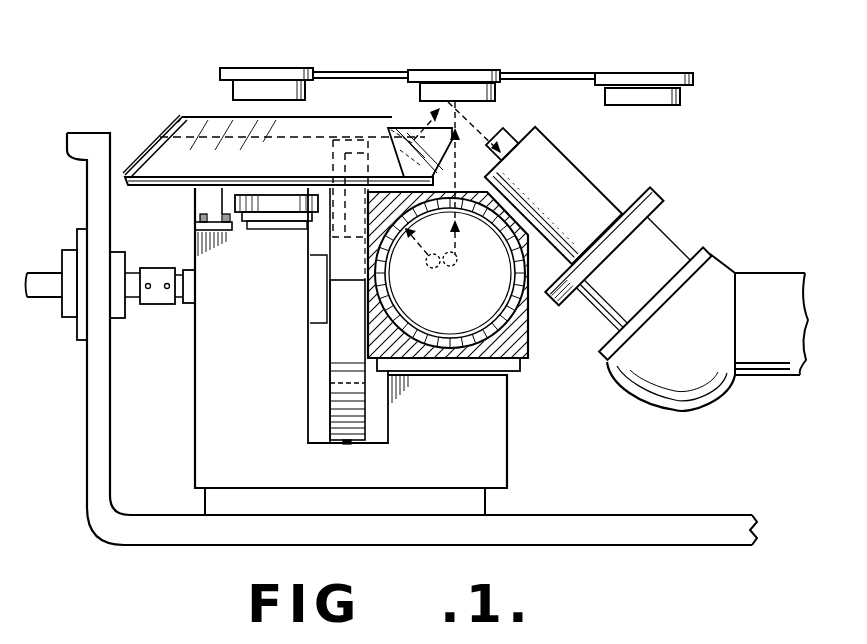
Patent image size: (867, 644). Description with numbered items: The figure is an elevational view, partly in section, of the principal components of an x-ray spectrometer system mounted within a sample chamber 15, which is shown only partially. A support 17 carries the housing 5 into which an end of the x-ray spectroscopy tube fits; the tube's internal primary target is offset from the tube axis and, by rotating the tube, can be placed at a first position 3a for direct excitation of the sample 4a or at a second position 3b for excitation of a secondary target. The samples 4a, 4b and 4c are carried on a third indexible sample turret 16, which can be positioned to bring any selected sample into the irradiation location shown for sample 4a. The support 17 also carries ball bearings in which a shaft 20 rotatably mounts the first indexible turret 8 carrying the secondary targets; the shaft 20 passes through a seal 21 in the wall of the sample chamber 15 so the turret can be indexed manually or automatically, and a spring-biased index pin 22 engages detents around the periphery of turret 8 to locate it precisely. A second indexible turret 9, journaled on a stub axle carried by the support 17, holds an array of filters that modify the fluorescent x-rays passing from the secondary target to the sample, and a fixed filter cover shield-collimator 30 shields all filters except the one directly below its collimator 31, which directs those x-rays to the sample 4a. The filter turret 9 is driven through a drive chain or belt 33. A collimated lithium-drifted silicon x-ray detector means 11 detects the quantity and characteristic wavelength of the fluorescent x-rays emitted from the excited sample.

The primary target position for direct excitation 3a is at (458, 262).
The primary target position for secondary target excitation 3b is at (432, 270).
The sample 4a is at (443, 90).
The sample 4b is at (630, 92).
The sample 4c is at (245, 90).
The housing 5 is at (538, 354).
The first indexible turret 8 is at (366, 418).
The second indexible turret 9 is at (152, 151).
The x-ray detector means 11 is at (623, 196).
The sample chamber 15 is at (88, 454).
The third indexible sample turret 16 is at (352, 72).
The support 17 is at (502, 455).
The shaft 20 is at (42, 280).
The seal 21 is at (122, 262).
The spring-biased index pin 22 is at (345, 445).
The fixed filter cover shield-collimator 30 is at (152, 152).
The collimator 31 is at (405, 128).
The drive chain or belt 33 is at (278, 208).